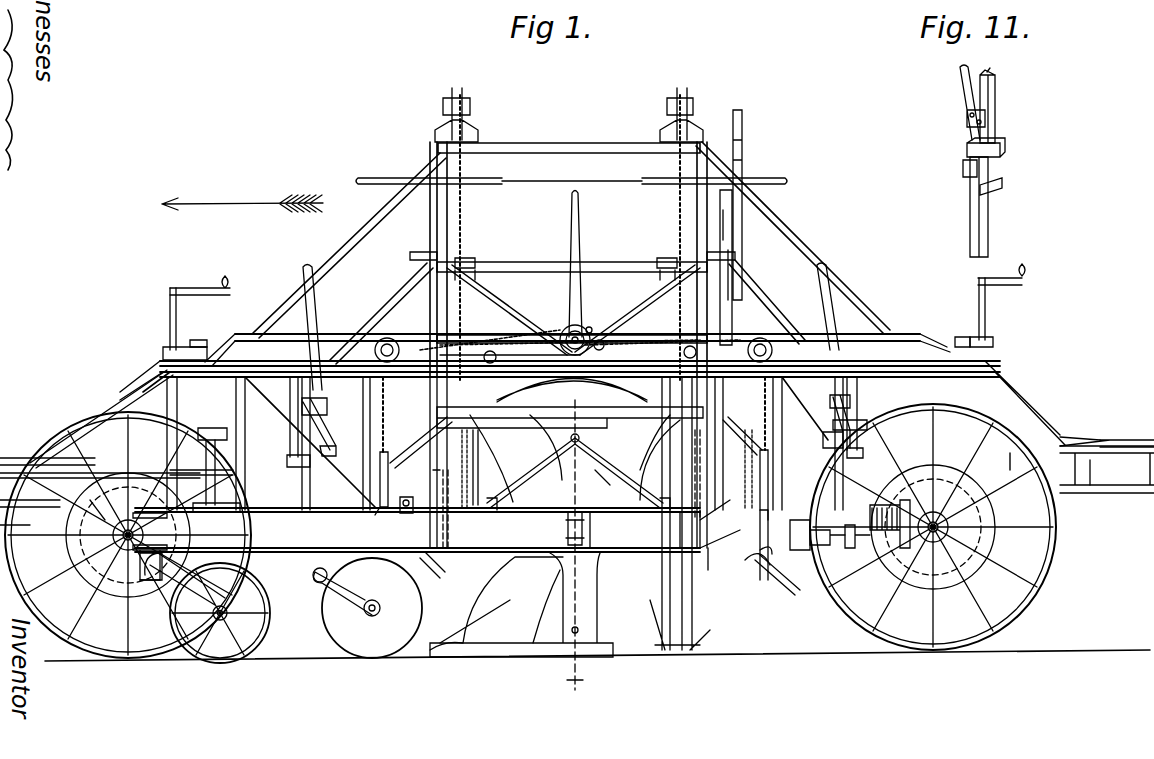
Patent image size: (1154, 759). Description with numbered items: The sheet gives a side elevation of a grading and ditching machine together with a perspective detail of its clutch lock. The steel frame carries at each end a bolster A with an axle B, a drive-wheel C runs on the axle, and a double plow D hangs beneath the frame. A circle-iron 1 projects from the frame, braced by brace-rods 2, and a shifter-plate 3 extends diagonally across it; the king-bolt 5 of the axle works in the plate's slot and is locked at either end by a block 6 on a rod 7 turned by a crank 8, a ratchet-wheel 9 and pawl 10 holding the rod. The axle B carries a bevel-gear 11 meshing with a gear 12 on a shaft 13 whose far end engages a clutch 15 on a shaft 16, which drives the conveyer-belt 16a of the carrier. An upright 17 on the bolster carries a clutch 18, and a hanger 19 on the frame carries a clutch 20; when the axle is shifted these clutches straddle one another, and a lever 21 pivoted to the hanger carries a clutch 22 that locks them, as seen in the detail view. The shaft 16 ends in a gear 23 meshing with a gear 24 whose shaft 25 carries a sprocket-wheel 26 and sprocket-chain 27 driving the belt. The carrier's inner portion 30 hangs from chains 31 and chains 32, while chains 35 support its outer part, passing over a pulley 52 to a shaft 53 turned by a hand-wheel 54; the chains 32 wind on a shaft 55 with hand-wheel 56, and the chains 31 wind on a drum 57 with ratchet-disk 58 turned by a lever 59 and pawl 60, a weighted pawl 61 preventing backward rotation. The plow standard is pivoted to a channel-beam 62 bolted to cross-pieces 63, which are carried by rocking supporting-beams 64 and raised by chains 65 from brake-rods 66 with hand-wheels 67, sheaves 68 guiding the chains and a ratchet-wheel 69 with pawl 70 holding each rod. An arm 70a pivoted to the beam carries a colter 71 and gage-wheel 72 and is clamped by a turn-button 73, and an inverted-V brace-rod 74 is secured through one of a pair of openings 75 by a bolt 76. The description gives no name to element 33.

In FIG. 1, the circle-iron 1 is at (577, 445).
In FIG. 1, the brace-rods 2 is at (95, 427).
In FIG. 1, the shifter-plate 3 is at (554, 483).
In FIG. 1, the king-bolt 5 is at (138, 463).
In FIG. 1, the block 6 is at (153, 480).
In FIG. 1, the rod 7 is at (175, 318).
In FIG. 1, the crank 8 is at (200, 288).
In FIG. 1, the ratchet-wheel 9 is at (163, 345).
In FIG. 1, the pawl 10 is at (195, 340).
In FIG. 1, the bevel-gear 11 is at (63, 556).
In FIG. 1, the bevel-gear 12 is at (881, 545).
In FIG. 1, the shaft 13 is at (848, 548).
In FIG. 1, the clutch 15 is at (815, 545).
In FIG. 1, the shaft 16 is at (802, 565).
In FIG. 1, the conveyer-belt 16a is at (695, 546).
In FIG. 1, the upright 17 is at (205, 451).
In FIG. 11, the upright 17 is at (992, 233).
In FIG. 1, the clutch 18 is at (212, 427).
In FIG. 11, the clutch 18 is at (1005, 148).
In FIG. 1, the hanger 19 is at (290, 440).
In FIG. 11, the hanger 19 is at (995, 98).
In FIG. 1, the clutch 20 is at (295, 470).
In FIG. 11, the clutch 20 is at (1018, 185).
In FIG. 1, the lever 21 is at (314, 307).
In FIG. 11, the lever 21 is at (960, 88).
In FIG. 1, the clutch 22 is at (320, 443).
In FIG. 11, the clutch 22 is at (962, 180).
In FIG. 1, the gear 23 is at (450, 525).
In FIG. 1, the gear 24 is at (447, 478).
In FIG. 1, the stud or shaft 25 is at (470, 465).
In FIG. 1, the sprocket-wheel 26 is at (460, 460).
In FIG. 1, the sprocket-chain 27 is at (665, 425).
In FIG. 1, the inner portion 30 is at (673, 513).
In FIG. 1, the chains 31 is at (470, 383).
In FIG. 1, the chains 32 is at (462, 318).
In FIG. 1, the rail end 33 is at (15, 525).
In FIG. 1, the chains 35 is at (462, 202).
In FIG. 1, the pulley 52 is at (465, 104).
In FIG. 1, the shaft 53 is at (563, 155).
In FIG. 1, the hand-wheel 54 is at (743, 140).
In FIG. 1, the shaft 55 is at (535, 265).
In FIG. 1, the hand-wheel 56 is at (740, 280).
In FIG. 1, the drum 57 is at (608, 330).
In FIG. 1, the ratchet-disk 58 is at (570, 326).
In FIG. 1, the lever 59 is at (578, 233).
In FIG. 1, the pawl 60 is at (592, 328).
In FIG. 1, the weighted pawl 61 is at (580, 365).
In FIG. 1, the channel-beam 62 is at (633, 529).
In FIG. 1, the cross-pieces 63 is at (380, 468).
In FIG. 1, the supporting-beams 64 is at (413, 439).
In FIG. 1, the chains 65 is at (385, 390).
In FIG. 1, the brake-rods 66 is at (430, 228).
In FIG. 1, the hand-wheels 67 is at (370, 178).
In FIG. 1, the sheaves 68 is at (390, 340).
In FIG. 1, the ratchet-wheel 69 is at (455, 247).
In FIG. 1, the pawl 70 is at (410, 252).
In FIG. 1, the arm 70a is at (417, 530).
In FIG. 1, the colter 71 is at (385, 620).
In FIG. 1, the gage-wheel 72 is at (265, 630).
In FIG. 1, the turn-button 73 is at (398, 515).
In FIG. 1, the brace-rod 74 is at (606, 482).
In FIG. 1, the openings 75 is at (600, 628).
In FIG. 1, the bolt 76 is at (571, 435).
In FIG. 1, the bolster A is at (100, 560).
In FIG. 1, the axle B is at (145, 535).
In FIG. 1, the drive-wheel C is at (60, 432).
In FIG. 1, the plow D is at (496, 532).